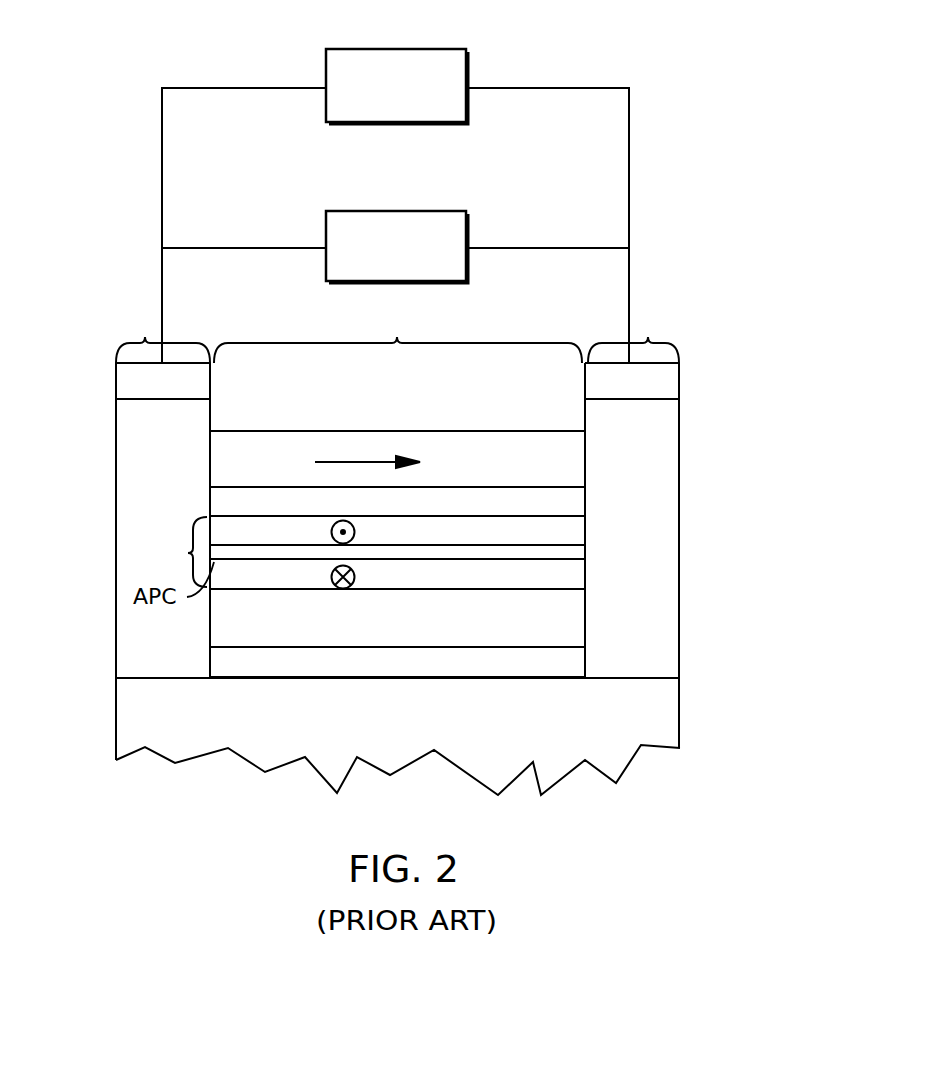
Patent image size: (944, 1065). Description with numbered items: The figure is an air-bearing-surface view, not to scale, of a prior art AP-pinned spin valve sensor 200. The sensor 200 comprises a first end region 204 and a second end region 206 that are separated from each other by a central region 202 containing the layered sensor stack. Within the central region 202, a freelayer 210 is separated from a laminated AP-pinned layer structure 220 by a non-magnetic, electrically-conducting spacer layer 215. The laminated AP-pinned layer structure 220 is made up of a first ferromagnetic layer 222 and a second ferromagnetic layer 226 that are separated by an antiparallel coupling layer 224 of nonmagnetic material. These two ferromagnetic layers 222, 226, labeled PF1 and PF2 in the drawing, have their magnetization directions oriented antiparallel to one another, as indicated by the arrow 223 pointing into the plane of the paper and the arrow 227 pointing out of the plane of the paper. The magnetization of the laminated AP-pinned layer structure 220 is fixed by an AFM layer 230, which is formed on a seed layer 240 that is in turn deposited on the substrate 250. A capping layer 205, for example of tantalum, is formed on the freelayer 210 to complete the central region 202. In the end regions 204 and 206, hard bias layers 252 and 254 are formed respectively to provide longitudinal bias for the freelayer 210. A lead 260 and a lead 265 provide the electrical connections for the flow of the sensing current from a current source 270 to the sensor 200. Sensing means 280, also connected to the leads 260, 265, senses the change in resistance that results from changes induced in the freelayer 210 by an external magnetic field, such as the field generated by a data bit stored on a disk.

The AP-pinned SV sensor 200 is at (606, 806).
The central region 202 is at (398, 337).
The end region 204 is at (145, 337).
The capping layer 205 is at (560, 413).
The end region 206 is at (648, 338).
The freelayer 210 is at (560, 452).
The spacer layer 215 is at (560, 497).
The laminated AP-pinned layer structure 220 is at (188, 553).
The first ferromagnetic layer 222 is at (563, 573).
The arrow 223 is at (343, 590).
The antiparallel coupling (APC) layer 224 is at (565, 553).
The second ferromagnetic layer 226 is at (560, 532).
The arrow 227 is at (343, 516).
The AFM layer 230 is at (562, 608).
The seed layer 240 is at (567, 657).
The substrate 250 is at (648, 712).
The hard bias layer 252 is at (135, 430).
The hard bias layer 254 is at (656, 413).
The lead 260 is at (145, 385).
The lead 265 is at (656, 378).
The current source 270 is at (466, 229).
The sensing means 280 is at (466, 67).